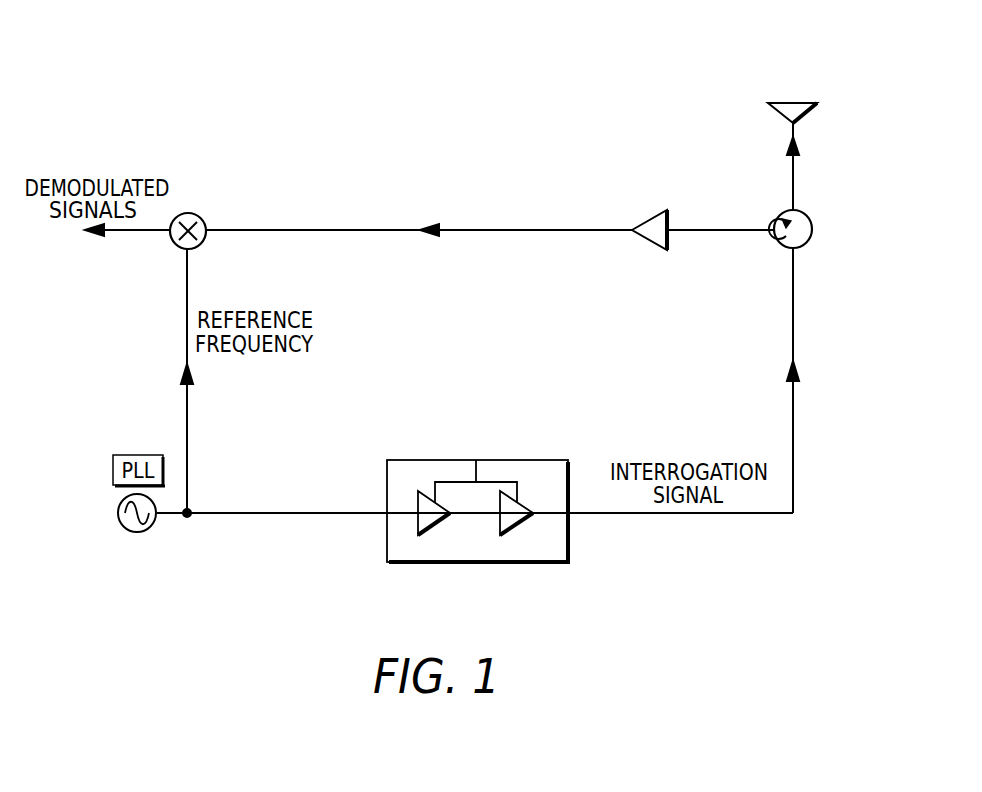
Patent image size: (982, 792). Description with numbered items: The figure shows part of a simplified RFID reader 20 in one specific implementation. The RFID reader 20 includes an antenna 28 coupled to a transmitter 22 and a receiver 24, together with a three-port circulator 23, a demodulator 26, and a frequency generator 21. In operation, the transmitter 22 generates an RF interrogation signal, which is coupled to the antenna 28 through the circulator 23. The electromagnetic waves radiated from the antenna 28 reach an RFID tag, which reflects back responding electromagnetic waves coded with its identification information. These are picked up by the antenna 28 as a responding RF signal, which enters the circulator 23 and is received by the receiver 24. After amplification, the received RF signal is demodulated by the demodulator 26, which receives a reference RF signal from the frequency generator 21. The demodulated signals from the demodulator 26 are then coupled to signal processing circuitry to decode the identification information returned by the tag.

The RFID reader 20 is at (742, 78).
The frequency generator 21 is at (118, 513).
The transmitter 22 is at (548, 565).
The circulator 23 is at (812, 229).
The receiver 24 is at (651, 211).
The demodulator 26 is at (194, 213).
The antenna 28 is at (812, 110).